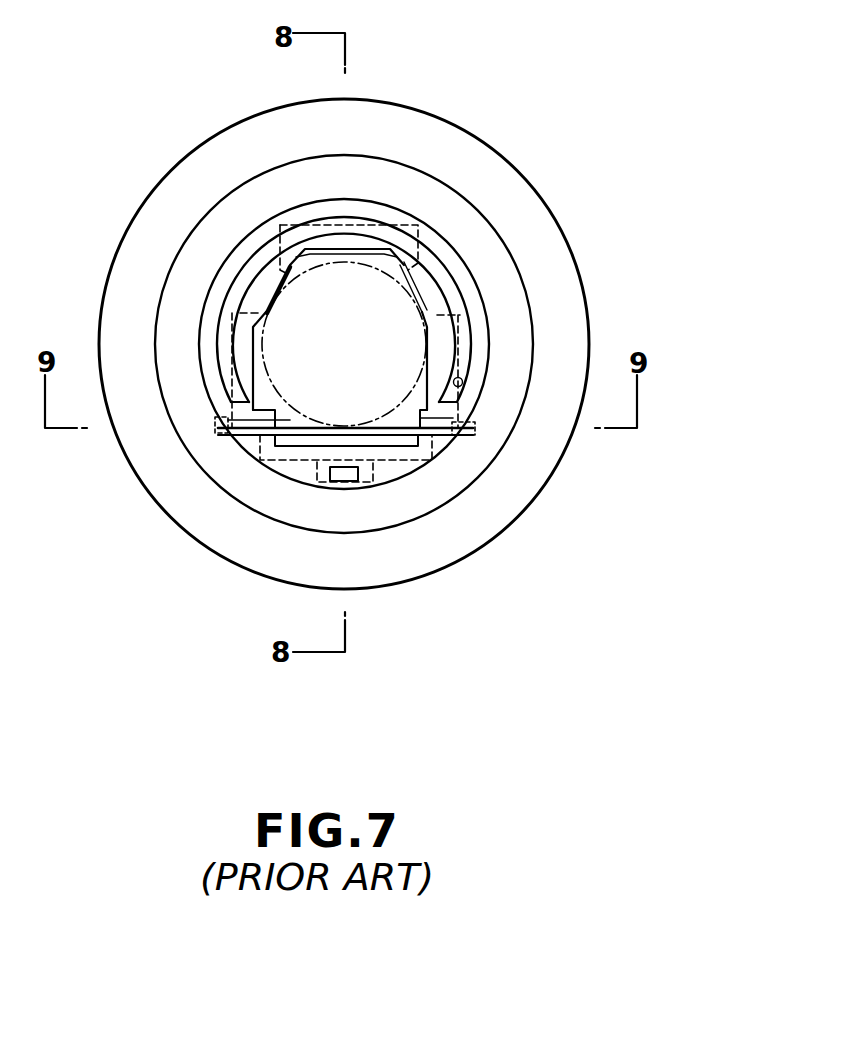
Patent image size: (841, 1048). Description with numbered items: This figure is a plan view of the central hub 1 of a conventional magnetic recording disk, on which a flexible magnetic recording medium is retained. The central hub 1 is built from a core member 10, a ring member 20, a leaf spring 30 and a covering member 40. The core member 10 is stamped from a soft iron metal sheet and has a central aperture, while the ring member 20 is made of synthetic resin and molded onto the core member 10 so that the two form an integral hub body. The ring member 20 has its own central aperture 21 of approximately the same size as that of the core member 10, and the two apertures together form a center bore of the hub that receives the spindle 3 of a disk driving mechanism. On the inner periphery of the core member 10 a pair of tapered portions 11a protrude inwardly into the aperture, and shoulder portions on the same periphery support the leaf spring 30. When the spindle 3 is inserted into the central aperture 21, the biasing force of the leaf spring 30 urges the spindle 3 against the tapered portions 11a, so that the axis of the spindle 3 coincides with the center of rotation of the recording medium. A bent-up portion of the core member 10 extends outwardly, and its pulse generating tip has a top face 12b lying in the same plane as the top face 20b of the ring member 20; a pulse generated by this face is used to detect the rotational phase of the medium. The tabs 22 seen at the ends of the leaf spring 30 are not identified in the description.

The central hub 1 is at (368, 592).
The spindle 3 is at (387, 267).
The core member 10 is at (463, 384).
The tapered portions 11a is at (279, 290).
The top face of the pulse generating portion 12b is at (347, 482).
The ring member 20 is at (468, 288).
The top face of the ring member 20b is at (390, 487).
The central aperture 21 is at (255, 347).
The tabs 22 is at (223, 424).
The leaf spring 30 is at (312, 430).
The covering member 40 is at (223, 470).